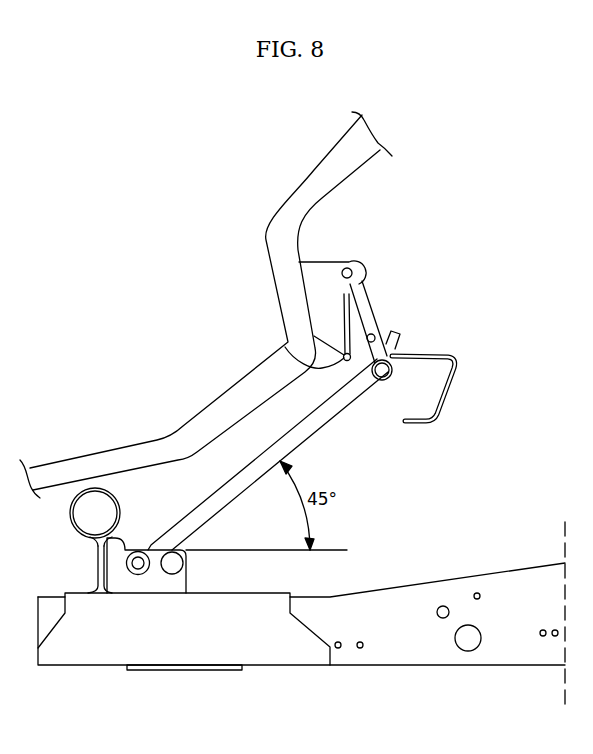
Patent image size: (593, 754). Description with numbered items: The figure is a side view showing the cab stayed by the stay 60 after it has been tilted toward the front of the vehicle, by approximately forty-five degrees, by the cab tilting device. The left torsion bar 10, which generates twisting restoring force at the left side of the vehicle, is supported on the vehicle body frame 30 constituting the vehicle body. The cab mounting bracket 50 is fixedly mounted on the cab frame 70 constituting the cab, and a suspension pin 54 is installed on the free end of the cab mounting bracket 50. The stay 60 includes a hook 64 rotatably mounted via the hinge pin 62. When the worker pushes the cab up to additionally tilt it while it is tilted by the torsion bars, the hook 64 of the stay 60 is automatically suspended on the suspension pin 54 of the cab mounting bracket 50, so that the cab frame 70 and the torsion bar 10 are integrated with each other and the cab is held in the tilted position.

The left torsion bar 10 is at (348, 403).
The vehicle body frame 30 is at (407, 653).
The cab mounting bracket 50 is at (320, 264).
The suspension pin 54 is at (366, 328).
The stay 60 is at (441, 342).
The hinge pin 62 is at (458, 362).
The hook 64 is at (286, 340).
The cab frame 70 is at (312, 177).